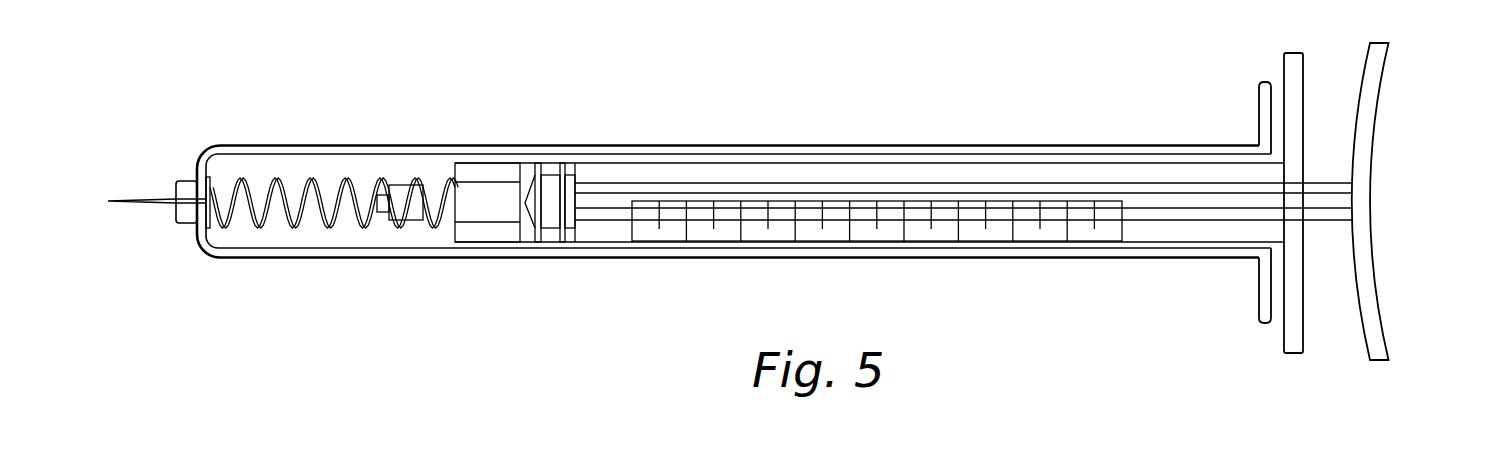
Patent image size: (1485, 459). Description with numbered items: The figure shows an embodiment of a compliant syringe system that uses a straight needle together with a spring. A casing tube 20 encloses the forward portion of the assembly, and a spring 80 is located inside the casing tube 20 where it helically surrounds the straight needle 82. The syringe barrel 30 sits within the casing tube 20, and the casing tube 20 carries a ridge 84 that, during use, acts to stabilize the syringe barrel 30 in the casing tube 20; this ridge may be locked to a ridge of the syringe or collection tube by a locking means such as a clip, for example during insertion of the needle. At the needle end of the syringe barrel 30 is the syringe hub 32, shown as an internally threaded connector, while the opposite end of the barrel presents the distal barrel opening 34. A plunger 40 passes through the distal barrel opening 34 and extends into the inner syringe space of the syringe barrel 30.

The casing tube 20 is at (500, 258).
The syringe barrel 30 is at (929, 165).
The syringe hub 32 is at (488, 172).
The distal barrel opening 34 is at (1277, 175).
The plunger 40 is at (1328, 215).
The spring 80 is at (338, 186).
The straight needle 82 is at (136, 200).
The ridge 84 is at (1264, 290).